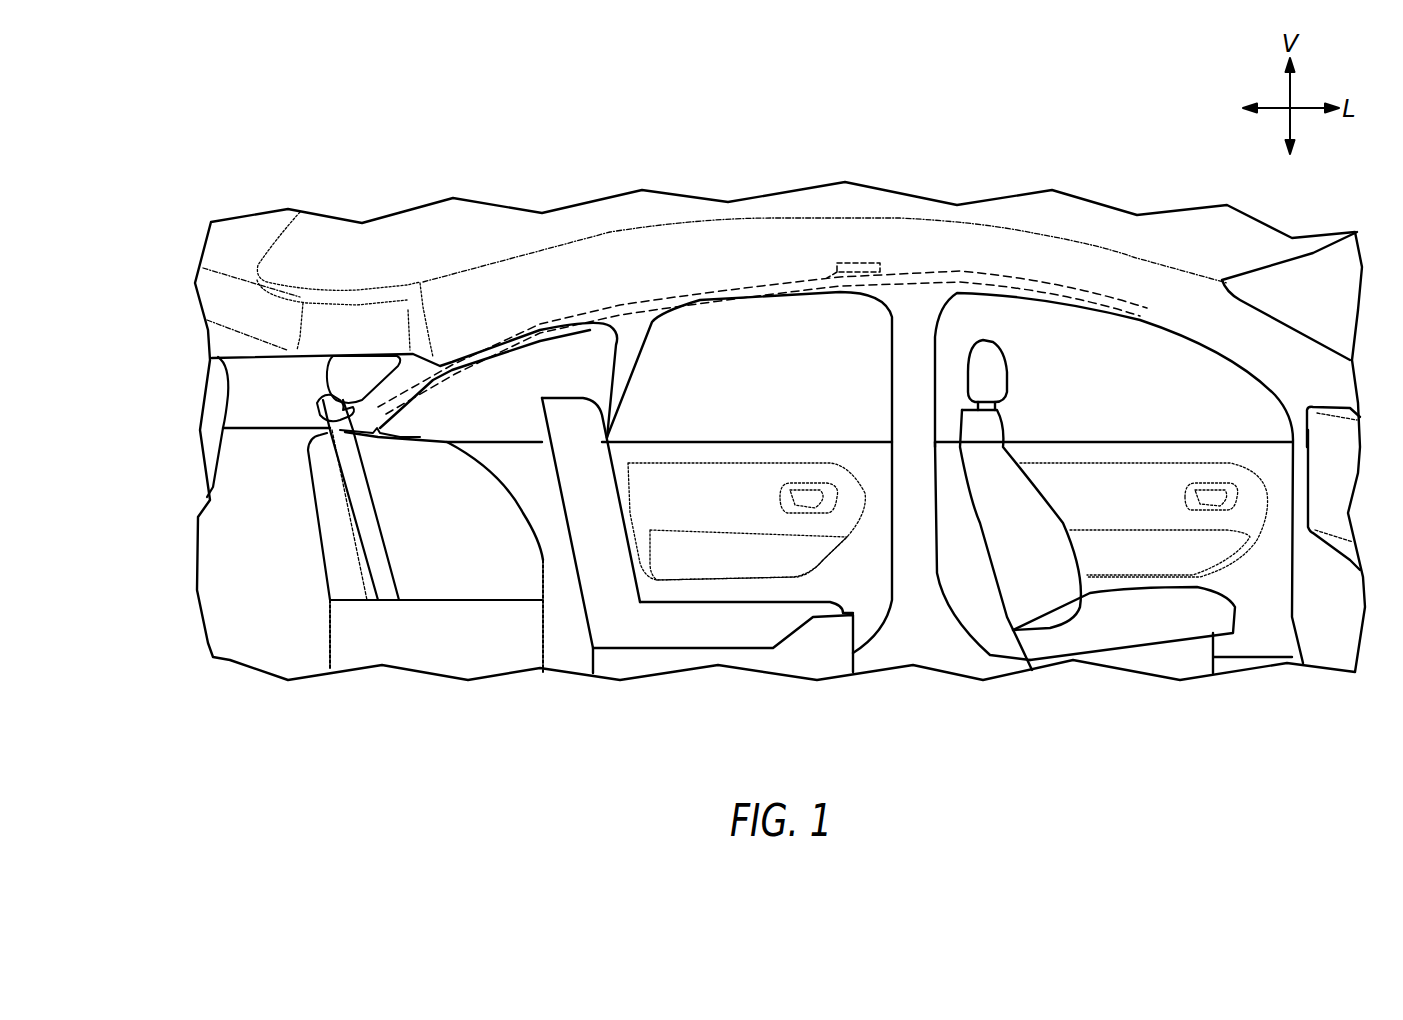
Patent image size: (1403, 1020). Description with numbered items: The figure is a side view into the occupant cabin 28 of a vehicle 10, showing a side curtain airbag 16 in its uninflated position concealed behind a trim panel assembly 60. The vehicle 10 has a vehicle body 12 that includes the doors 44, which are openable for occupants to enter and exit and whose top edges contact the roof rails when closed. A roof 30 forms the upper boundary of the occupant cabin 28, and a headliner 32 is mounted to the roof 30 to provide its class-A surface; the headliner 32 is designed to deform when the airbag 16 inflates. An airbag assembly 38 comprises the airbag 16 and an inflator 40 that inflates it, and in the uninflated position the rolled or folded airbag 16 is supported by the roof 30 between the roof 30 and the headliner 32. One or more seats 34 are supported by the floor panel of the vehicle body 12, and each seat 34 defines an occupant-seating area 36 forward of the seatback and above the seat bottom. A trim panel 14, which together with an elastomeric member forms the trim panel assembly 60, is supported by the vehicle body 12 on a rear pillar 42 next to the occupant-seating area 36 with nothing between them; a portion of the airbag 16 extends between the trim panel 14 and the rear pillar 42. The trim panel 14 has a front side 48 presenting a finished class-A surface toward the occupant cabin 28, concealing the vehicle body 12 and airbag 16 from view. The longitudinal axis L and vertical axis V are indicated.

The vehicle 10 is at (1097, 157).
The vehicle body 12 is at (917, 353).
The trim panel 14 is at (258, 392).
The airbag 16 is at (640, 293).
The occupant cabin 28 is at (558, 643).
The roof 30 is at (828, 207).
The headliner 32 is at (727, 257).
The seat 34 is at (342, 557).
The occupant-seating area 36 is at (443, 533).
The airbag assembly 38 is at (878, 250).
The inflator 40 is at (837, 270).
The rear pillar 42 is at (447, 330).
The door 44 is at (858, 582).
The front side 48 is at (277, 430).
The trim panel assembly 60 is at (291, 385).